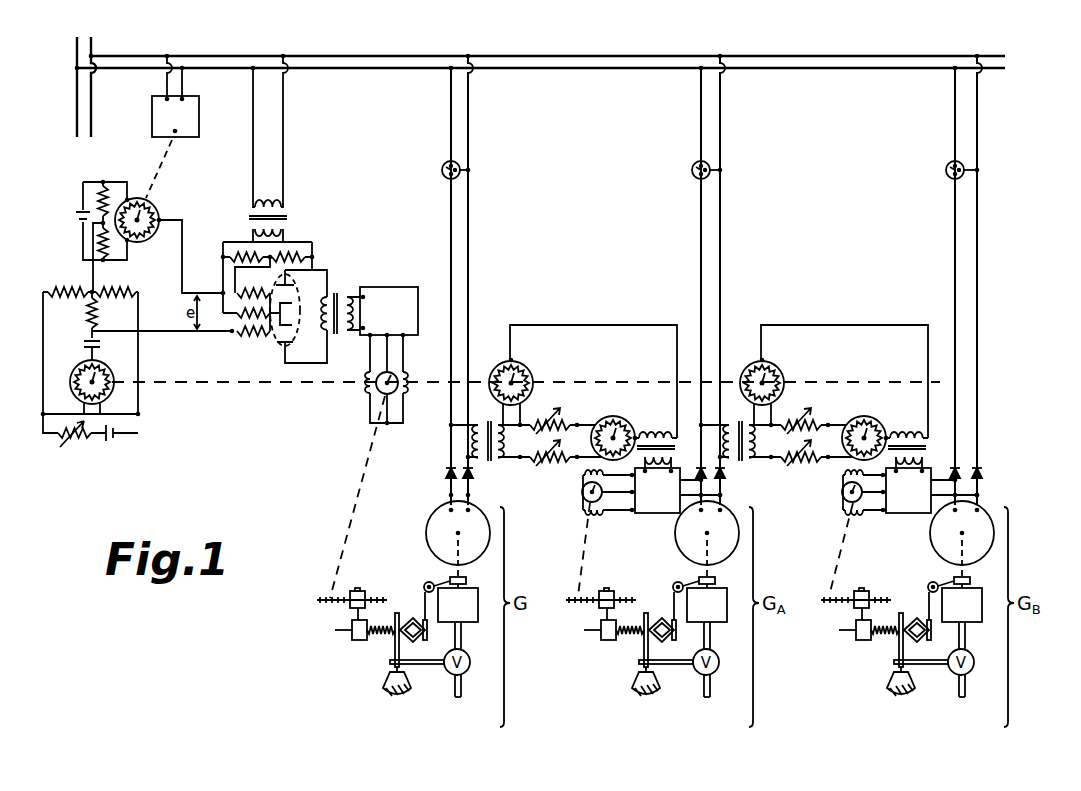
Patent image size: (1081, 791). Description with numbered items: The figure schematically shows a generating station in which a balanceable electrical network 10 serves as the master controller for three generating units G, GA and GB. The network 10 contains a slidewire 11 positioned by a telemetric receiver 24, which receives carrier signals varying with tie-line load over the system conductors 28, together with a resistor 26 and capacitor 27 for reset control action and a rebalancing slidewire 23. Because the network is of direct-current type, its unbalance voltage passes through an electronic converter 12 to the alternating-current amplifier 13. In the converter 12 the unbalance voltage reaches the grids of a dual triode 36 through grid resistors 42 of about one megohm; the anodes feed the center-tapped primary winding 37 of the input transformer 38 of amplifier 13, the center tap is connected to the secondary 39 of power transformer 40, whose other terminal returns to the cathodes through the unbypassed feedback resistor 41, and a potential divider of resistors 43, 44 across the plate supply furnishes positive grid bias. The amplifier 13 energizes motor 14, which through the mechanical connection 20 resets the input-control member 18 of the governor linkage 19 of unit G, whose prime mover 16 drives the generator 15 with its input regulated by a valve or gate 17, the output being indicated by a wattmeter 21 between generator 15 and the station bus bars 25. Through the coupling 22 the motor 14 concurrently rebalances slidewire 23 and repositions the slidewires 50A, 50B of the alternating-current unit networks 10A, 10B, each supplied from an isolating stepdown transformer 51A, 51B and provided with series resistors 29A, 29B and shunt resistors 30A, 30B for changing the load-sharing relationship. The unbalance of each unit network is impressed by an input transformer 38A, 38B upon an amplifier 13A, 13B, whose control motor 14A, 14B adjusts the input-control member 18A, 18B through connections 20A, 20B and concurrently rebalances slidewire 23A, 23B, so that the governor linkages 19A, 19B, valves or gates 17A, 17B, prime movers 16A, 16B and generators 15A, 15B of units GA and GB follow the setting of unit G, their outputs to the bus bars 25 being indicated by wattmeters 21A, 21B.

The balanceable electrical network 10 is at (155, 270).
The balanceable control network 10A is at (624, 353).
The balanceable control network 10B is at (844, 381).
The slidewire 11 is at (148, 208).
The converter 12 is at (276, 364).
The amplifier 13 is at (400, 317).
The amplifier 13A is at (678, 490).
The control unit B 13B is at (932, 490).
The control motor 14 is at (352, 414).
The control motor 14A is at (568, 511).
The control motor 14B is at (836, 492).
The generator 15 is at (428, 531).
The generator A 15A is at (683, 544).
The generator B 15B is at (938, 544).
The prime mover 16 is at (458, 642).
The prime mover A 16A is at (707, 642).
The prime mover B 16B is at (962, 642).
The valve or gate 17 is at (462, 672).
The speed governor A 17A is at (721, 674).
The speed governor B 17B is at (975, 674).
The input-control member 18 is at (357, 642).
The input-control member 18A is at (607, 646).
The input-control member 18B is at (862, 646).
The rack 19 is at (389, 582).
The rack A 19A is at (605, 591).
The rack B 19B is at (860, 591).
The mechanical connection 20 is at (350, 510).
The mechanical linkage A 20A is at (580, 563).
The mechanical linkage B 20B is at (853, 549).
The wattmeter 21 is at (443, 167).
The frequency meter A 21A is at (693, 168).
The frequency meter B 21B is at (947, 168).
The mechanical coupling 22 is at (258, 385).
The slidewire 23 is at (70, 381).
The slidewire 23A is at (609, 418).
The slidewire 23B is at (865, 424).
The telemetric receiver 24 is at (186, 125).
The station bus bars 25 is at (322, 67).
The resistor 26 is at (90, 313).
The capacitor 27 is at (102, 344).
The system conductors 28 is at (88, 99).
The series resistors 29A is at (546, 420).
The variable resistor B 29B is at (815, 437).
The shunt resistor 30A is at (583, 446).
The slider B 30B is at (805, 439).
The dual triode 36 is at (297, 337).
The primary winding 37 is at (335, 294).
The input transformer 38 is at (366, 354).
The input transformer 38A is at (671, 433).
The transformer B 38B is at (906, 443).
The secondary winding 39 is at (256, 223).
The power transformer 40 is at (325, 216).
The unbypassed resistor 41 is at (237, 314).
The grid resistor 42 is at (250, 346).
The resistor 43 is at (242, 255).
The resistor 44 is at (294, 255).
The slidewire 50A is at (518, 367).
The slidewire 50B is at (773, 379).
The isolating stepdown transformer 51A is at (502, 485).
The current transformer B 51B is at (740, 453).